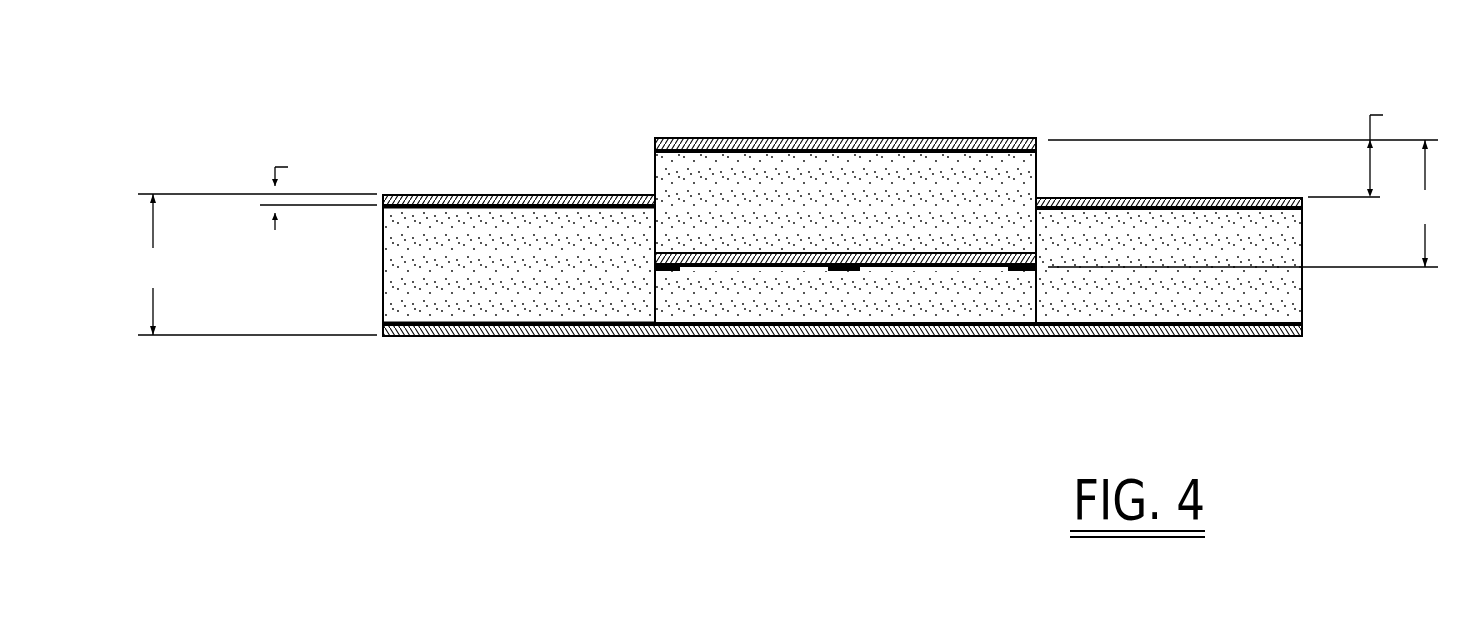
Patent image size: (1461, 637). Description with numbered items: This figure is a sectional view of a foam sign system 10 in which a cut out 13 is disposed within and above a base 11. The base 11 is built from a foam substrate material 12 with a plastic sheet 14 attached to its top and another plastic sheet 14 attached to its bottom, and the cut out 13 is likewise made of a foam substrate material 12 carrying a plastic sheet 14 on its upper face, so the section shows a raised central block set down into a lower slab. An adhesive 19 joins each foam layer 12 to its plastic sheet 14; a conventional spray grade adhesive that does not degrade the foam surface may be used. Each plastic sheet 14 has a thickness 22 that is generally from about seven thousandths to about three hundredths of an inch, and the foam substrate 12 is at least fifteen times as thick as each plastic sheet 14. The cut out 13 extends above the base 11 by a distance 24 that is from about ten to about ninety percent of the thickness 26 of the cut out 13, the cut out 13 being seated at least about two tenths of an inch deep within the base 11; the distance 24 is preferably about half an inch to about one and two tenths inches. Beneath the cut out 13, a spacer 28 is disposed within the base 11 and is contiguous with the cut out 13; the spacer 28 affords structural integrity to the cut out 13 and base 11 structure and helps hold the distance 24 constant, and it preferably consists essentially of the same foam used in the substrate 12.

The foam sign system 10 is at (836, 75).
The base 11 is at (318, 272).
The foam substrate material 12 is at (438, 288).
The cut out 13 is at (670, 178).
The plastic sheet 14 is at (465, 194).
The adhesive 19 is at (395, 208).
The thickness of plastic sheet 22 is at (257, 192).
The distance 24 is at (1243, 148).
The thickness of cut out 26 is at (785, 237).
The spacer 28 is at (942, 310).